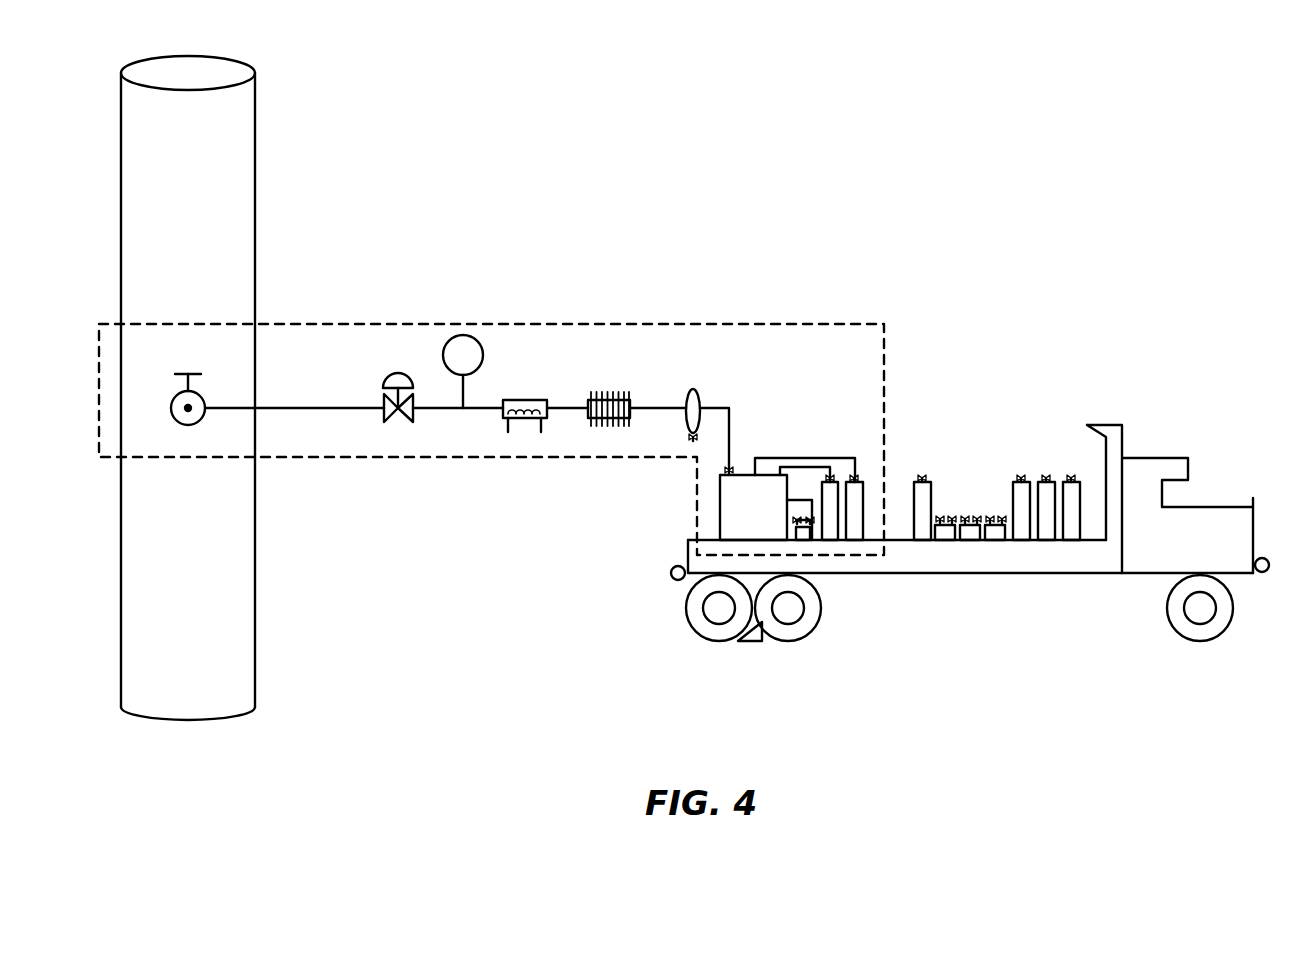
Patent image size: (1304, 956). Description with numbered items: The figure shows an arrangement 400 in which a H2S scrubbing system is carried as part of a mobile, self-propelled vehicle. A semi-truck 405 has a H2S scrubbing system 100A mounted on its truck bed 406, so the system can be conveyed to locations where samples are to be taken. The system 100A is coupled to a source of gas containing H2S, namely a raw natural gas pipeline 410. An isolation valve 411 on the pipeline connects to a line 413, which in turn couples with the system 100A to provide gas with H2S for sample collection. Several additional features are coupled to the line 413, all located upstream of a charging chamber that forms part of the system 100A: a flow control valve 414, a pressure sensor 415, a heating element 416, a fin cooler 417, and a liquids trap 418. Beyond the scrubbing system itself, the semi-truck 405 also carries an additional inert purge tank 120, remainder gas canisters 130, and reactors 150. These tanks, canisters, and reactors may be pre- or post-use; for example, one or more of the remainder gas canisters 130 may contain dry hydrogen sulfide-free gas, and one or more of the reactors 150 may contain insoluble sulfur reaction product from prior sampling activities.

The system 400 is at (1088, 142).
The raw natural gas pipeline 410 is at (214, 219).
The isolation valve 411 is at (188, 425).
The line 413 is at (357, 406).
The flow control valve 414 is at (398, 372).
The pressure sensor 415 is at (463, 335).
The heating element 416 is at (527, 400).
The fin cooler 417 is at (612, 392).
The liquids trap 418 is at (700, 390).
The H2S scrubbing system 100A is at (592, 537).
The inert purge tank 120 is at (856, 450).
The remainder gas canisters 130 is at (828, 458).
The reactors 150 is at (806, 540).
The semi-truck 405 is at (1253, 655).
The truck bed 406 is at (655, 570).